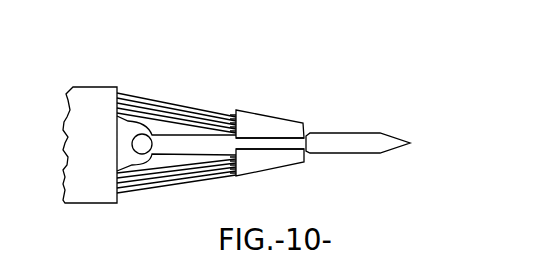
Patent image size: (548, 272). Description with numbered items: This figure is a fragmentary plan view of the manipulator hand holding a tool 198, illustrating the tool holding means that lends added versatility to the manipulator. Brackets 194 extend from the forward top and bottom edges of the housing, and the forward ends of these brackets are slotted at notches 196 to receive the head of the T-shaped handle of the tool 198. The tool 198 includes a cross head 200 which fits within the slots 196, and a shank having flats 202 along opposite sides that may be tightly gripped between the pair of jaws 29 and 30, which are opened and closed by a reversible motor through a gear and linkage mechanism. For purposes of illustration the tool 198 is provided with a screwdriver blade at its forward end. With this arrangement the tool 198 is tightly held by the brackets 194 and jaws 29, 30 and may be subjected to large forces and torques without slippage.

The brackets 194 is at (137, 123).
The slots 196 is at (133, 153).
The tool 198 is at (351, 131).
The cross head 200 is at (147, 141).
The flats 202 is at (291, 137).
The jaw 29 is at (285, 112).
The jaw 30 is at (272, 175).